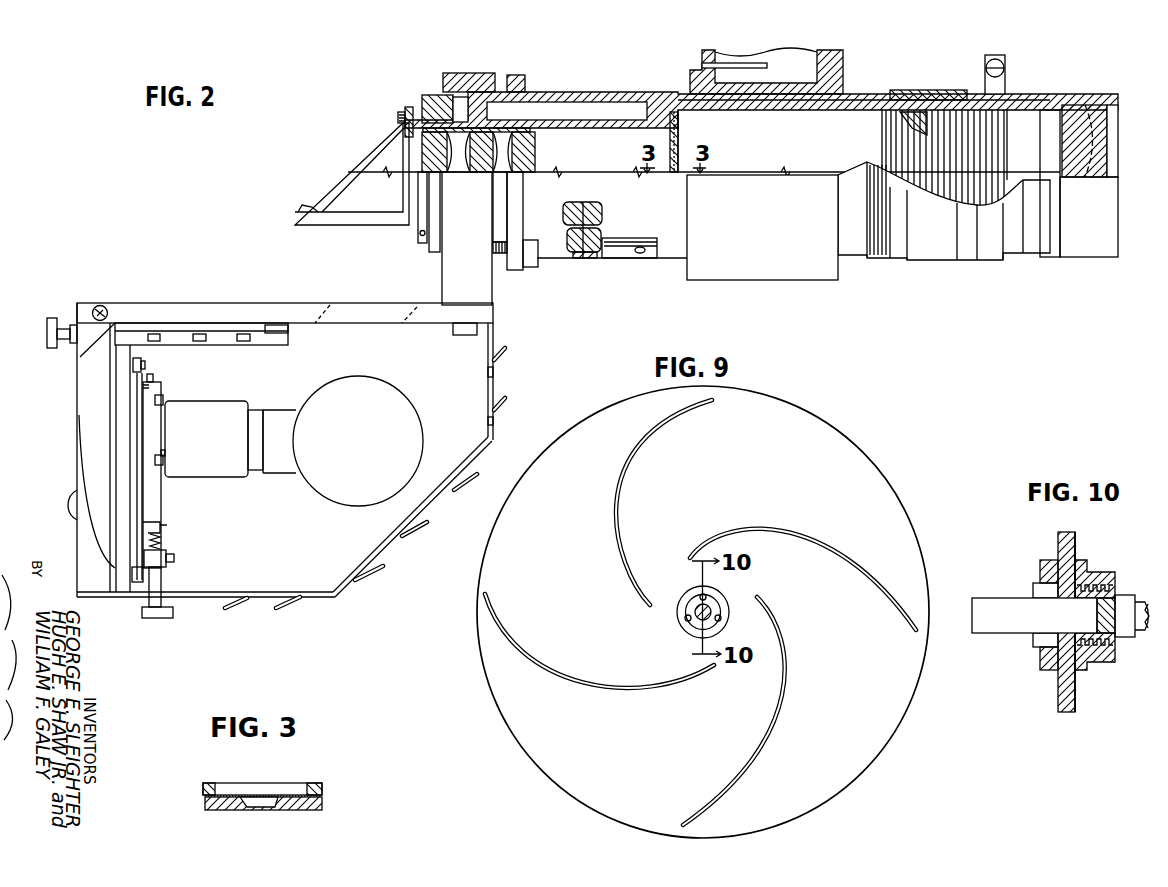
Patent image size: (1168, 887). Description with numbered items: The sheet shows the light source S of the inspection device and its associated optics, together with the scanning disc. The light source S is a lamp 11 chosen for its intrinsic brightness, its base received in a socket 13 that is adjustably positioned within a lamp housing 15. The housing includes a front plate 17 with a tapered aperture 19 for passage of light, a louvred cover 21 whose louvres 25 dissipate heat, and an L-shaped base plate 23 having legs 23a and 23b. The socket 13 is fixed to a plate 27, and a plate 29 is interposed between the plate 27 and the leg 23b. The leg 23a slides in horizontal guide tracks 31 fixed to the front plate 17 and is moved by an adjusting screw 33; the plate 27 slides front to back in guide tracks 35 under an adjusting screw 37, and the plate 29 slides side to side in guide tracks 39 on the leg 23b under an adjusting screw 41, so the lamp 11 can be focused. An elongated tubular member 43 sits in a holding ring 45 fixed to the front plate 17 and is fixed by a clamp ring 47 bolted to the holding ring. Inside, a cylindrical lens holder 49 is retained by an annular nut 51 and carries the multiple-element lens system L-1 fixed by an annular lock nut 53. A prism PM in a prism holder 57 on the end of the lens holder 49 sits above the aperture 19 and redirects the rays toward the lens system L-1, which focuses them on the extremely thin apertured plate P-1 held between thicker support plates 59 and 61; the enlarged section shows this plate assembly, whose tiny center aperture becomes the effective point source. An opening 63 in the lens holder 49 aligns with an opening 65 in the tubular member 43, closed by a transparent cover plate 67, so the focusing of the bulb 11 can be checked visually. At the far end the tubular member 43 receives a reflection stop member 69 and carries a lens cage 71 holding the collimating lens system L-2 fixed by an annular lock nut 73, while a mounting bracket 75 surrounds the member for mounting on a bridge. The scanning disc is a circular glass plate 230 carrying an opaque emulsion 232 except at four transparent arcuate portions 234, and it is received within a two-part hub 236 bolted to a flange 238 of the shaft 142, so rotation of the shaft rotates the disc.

In FIG. 2, the lamp 11 is at (313, 392).
In FIG. 2, the socket 13 is at (224, 401).
In FIG. 2, the lamp housing 15 is at (500, 441).
In FIG. 2, the front plate 17 is at (249, 305).
In FIG. 2, the aperture 19 is at (338, 318).
In FIG. 2, the cover 21 is at (387, 547).
In FIG. 2, the base plate 23 is at (118, 432).
In FIG. 2, the leg 23a is at (288, 339).
In FIG. 2, the leg 23b is at (118, 453).
In FIG. 2, the louvres 25 is at (378, 570).
In FIG. 2, the plate 27 is at (163, 389).
In FIG. 2, the plate 29 is at (137, 407).
In FIG. 2, the guide tracks 31 is at (186, 322).
In FIG. 2, the adjusting screw 33 is at (45, 334).
In FIG. 2, the guide tracks 35 is at (150, 519).
In FIG. 2, the adjusting screw 37 is at (167, 618).
In FIG. 2, the guide tracks 39 is at (133, 368).
In FIG. 2, the adjusting screw 41 is at (66, 505).
In FIG. 2, the tubular member 43 is at (610, 88).
In FIG. 2, the holding ring 45 is at (462, 68).
In FIG. 2, the clamp ring 47 is at (515, 75).
In FIG. 2, the lens holder 49 is at (587, 132).
In FIG. 2, the annular nut 51 is at (436, 95).
In FIG. 2, the annular lock nut 53 is at (405, 132).
In FIG. 2, the prism holder 57 is at (377, 225).
In FIG. 2, the support plate 59 is at (667, 172).
In FIG. 3, the support plate 59 is at (312, 790).
In FIG. 2, the support plate 61 is at (681, 172).
In FIG. 3, the support plate 61 is at (318, 806).
In FIG. 2, the opening 63 is at (583, 208).
In FIG. 2, the opening 65 is at (588, 240).
In FIG. 2, the transparent cover plate 67 is at (634, 258).
In FIG. 2, the reflection stop member 69 is at (908, 145).
In FIG. 2, the lens cage 71 is at (1082, 94).
In FIG. 2, the annular lock nut 73 is at (1112, 95).
In FIG. 2, the mounting bracket 75 is at (843, 73).
In FIG. 9, the shaft 142 is at (696, 611).
In FIG. 10, the shaft 142 is at (1012, 625).
In FIG. 9, the circular glass plate 230 is at (849, 438).
In FIG. 10, the circular glass plate 230 is at (1058, 541).
In FIG. 10, the opaque emulsion 232 is at (1076, 541).
In FIG. 9, the transparent arcuate portions 234 is at (692, 556).
In FIG. 10, the two-part hub 236 is at (1040, 570).
In FIG. 10, the flange 238 is at (1105, 580).
In FIG. 2, the light source S is at (153, 294).
In FIG. 2, the prism PM is at (347, 183).
In FIG. 2, the lens system L-1 is at (469, 200).
In FIG. 2, the collimating lens system L-2 is at (1083, 188).
In FIG. 2, the apertured plate P-1 is at (680, 148).
In FIG. 3, the apertured plate P-1 is at (262, 797).